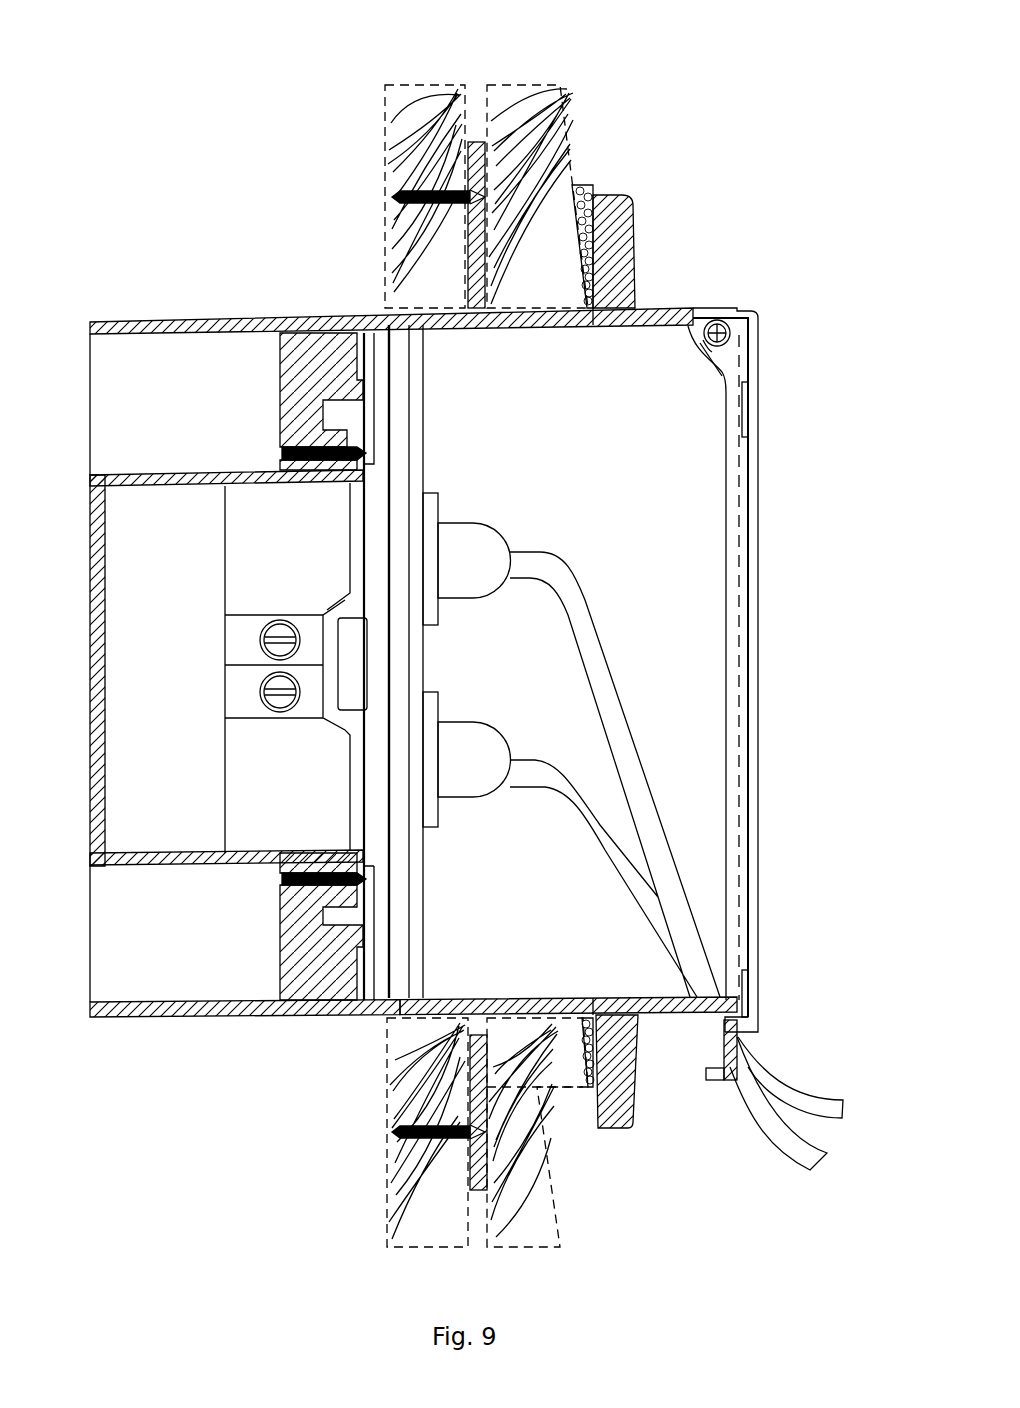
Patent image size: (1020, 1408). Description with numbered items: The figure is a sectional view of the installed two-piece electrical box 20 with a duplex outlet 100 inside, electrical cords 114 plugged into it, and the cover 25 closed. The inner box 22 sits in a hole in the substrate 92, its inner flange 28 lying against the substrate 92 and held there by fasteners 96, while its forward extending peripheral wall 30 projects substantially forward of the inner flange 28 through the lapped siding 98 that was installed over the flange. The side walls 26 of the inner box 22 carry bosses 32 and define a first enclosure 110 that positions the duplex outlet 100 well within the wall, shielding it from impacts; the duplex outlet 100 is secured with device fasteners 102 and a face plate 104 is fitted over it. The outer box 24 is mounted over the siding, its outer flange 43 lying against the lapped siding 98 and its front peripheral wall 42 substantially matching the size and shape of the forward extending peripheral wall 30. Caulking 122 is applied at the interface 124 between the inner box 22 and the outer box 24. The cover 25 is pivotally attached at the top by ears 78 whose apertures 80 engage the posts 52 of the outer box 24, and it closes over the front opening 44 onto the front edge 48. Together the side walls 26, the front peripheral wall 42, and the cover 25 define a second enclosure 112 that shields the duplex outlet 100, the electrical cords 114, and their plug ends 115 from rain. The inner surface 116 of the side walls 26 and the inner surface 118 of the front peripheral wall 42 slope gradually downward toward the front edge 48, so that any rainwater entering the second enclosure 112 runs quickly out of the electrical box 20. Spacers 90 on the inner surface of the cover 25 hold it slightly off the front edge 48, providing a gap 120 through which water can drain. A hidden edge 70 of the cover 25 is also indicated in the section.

The two-piece electrical box 20 is at (205, 262).
The inner box 22 is at (140, 320).
The outer box 24 is at (718, 312).
The cover 25 is at (760, 678).
The side walls 26 is at (220, 1012).
The inner flange 28 is at (478, 140).
The forward extending peripheral wall 30 is at (543, 1000).
The bosses 32 is at (343, 897).
The front peripheral wall 42 is at (660, 1012).
The outer flange 43 is at (630, 200).
The front opening 44 is at (712, 498).
The front edge 48 is at (749, 790).
The posts 52 is at (722, 325).
The hidden edge line 70 is at (740, 543).
The ears 78 is at (685, 336).
The apertures 80 is at (712, 352).
The spacers 90 is at (745, 408).
The substrate 92 is at (400, 108).
The fasteners 96 is at (408, 190).
The lapped siding 98 is at (545, 90).
The duplex outlet 100 is at (296, 666).
The device fasteners 102 is at (370, 458).
The face plate 104 is at (415, 400).
The first enclosure 110 is at (226, 668).
The second enclosure 112 is at (615, 774).
The electrical cords 114 is at (783, 1090).
The plug ends 115 is at (467, 660).
The inner surface of the side walls 116 is at (472, 997).
The inner surface of the front peripheral wall 118 is at (640, 997).
The gap 120 is at (745, 1025).
The caulking 122 is at (582, 190).
The interface 124 is at (590, 330).